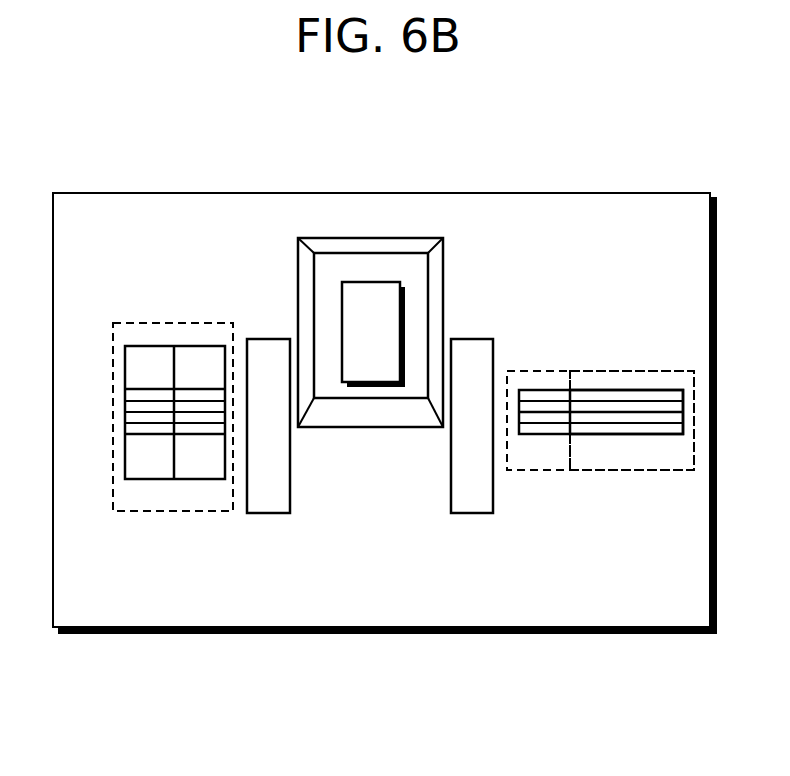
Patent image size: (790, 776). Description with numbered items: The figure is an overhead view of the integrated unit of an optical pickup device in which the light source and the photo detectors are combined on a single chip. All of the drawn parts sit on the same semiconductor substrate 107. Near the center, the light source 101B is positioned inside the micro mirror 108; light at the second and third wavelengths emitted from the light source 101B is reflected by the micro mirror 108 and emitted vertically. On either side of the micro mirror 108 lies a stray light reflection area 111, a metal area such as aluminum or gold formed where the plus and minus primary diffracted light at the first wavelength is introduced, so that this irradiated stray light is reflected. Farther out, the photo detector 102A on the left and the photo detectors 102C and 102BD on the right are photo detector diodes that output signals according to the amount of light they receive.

The semiconductor substrate 107 is at (648, 193).
The stray light reflection area 111 is at (263, 352).
The light source 101B is at (373, 325).
The micro mirror 108 is at (387, 415).
The photo detector 102A is at (190, 500).
The photo detector 102C is at (542, 458).
The photo detector 102BD is at (645, 457).